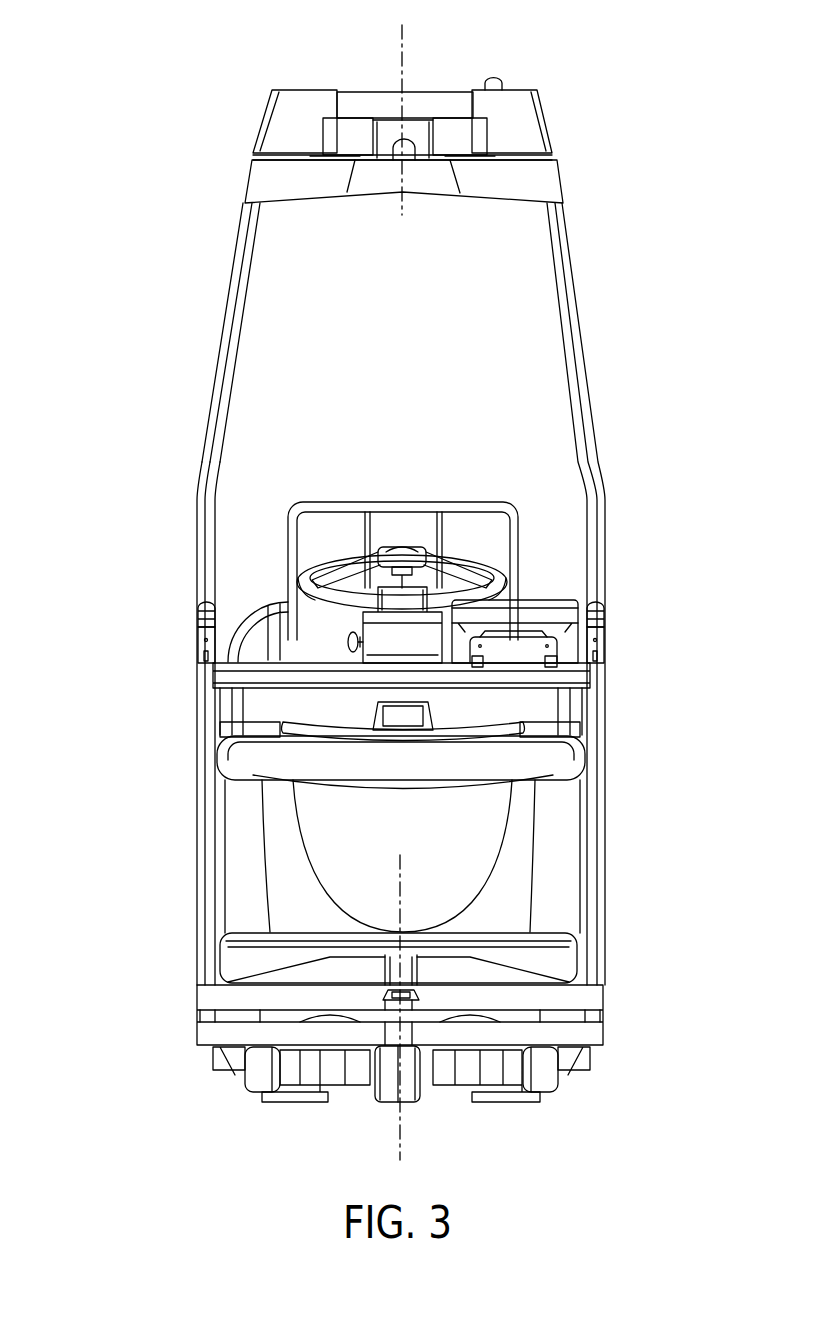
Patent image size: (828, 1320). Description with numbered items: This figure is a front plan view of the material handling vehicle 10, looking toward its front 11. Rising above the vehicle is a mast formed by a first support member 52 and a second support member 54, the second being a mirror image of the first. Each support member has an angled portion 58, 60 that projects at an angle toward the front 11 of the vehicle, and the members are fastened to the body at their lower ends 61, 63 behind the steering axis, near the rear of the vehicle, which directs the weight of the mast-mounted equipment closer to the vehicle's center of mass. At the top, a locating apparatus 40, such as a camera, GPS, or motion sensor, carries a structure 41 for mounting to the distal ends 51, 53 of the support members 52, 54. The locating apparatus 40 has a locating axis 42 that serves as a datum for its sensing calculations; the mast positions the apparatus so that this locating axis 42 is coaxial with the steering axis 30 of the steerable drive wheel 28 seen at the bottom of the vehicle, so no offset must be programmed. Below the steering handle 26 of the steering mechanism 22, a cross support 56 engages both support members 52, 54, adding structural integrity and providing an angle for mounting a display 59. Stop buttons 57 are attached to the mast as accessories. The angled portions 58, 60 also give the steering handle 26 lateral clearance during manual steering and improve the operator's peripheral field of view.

The material handling vehicle 10 is at (421, 571).
The front 11 is at (349, 856).
The steering mechanism 22 is at (393, 479).
The steering handle 26 is at (318, 565).
The steerable drive wheel 28 is at (385, 1101).
The steering axis 30 is at (404, 1151).
The locating apparatus 40 is at (234, 78).
The structure 41 is at (531, 112).
The locating axis 42 is at (404, 57).
The distal end 51 is at (560, 215).
The first support member 52 is at (587, 292).
The distal end 53 is at (240, 216).
The second support member 54 is at (211, 378).
The cross support 56 is at (268, 660).
The stop buttons 57 is at (199, 605).
The angled portion 58 is at (600, 722).
The display 59 is at (538, 595).
The angled portion 60 is at (205, 722).
The end 61 is at (596, 980).
The end 63 is at (216, 955).